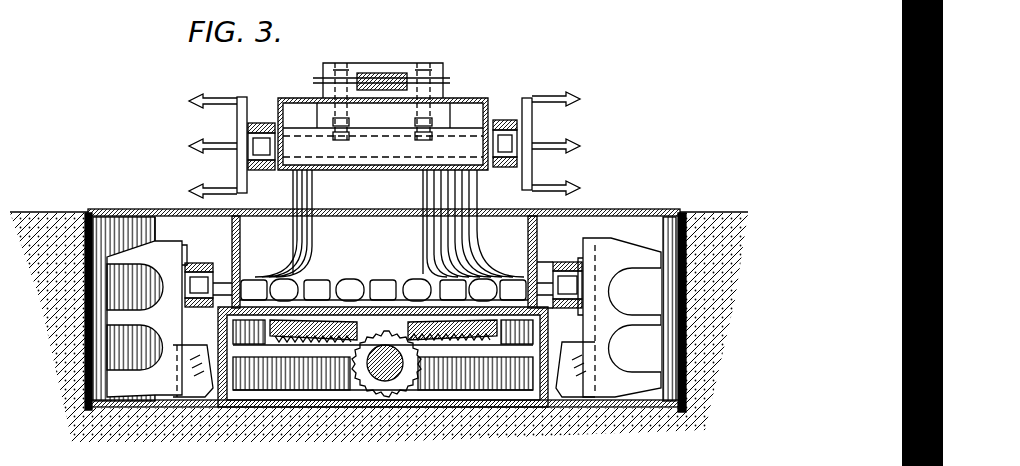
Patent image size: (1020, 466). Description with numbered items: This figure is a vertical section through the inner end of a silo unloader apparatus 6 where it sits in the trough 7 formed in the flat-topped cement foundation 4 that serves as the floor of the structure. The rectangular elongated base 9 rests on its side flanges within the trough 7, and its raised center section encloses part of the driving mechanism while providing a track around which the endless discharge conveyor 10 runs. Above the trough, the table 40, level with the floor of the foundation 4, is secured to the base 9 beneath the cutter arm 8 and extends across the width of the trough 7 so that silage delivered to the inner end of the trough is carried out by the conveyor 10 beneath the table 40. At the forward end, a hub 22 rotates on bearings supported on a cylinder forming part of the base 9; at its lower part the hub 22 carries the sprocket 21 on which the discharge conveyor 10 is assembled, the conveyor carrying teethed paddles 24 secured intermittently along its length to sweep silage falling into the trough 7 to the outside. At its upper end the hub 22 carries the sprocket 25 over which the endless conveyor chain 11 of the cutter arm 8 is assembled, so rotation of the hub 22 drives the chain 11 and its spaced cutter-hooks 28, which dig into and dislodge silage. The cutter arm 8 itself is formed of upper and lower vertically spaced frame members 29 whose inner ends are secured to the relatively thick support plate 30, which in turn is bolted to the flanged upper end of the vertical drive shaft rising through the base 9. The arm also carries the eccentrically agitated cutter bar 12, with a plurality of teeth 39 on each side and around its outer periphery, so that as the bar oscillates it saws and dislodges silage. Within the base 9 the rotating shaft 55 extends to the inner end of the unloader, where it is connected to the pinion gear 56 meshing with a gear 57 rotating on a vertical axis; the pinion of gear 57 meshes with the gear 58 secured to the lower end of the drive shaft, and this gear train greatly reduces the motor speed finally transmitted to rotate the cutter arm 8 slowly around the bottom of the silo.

The foundation 4 is at (42, 208).
The unloader apparatus 6 is at (490, 93).
The trough 7 is at (613, 223).
The cutter arm 8 is at (299, 97).
The base 9 is at (232, 401).
The discharge conveyor 10 is at (200, 263).
The endless conveyor chain 11 is at (507, 118).
The cutter bar 12 is at (387, 73).
The sprocket 21 is at (378, 280).
The hub 22 is at (303, 233).
The teethed paddles 24 is at (143, 257).
The sprocket 25 is at (246, 143).
The cutter-hooks 28 is at (190, 188).
The frame members 29 is at (397, 105).
The support plate 30 is at (450, 115).
The teeth 39 is at (318, 78).
The table 40 is at (128, 209).
The rotating shaft 55 is at (377, 381).
The pinion gear 56 is at (396, 388).
The gear 57 is at (482, 343).
The gear 58 is at (487, 378).